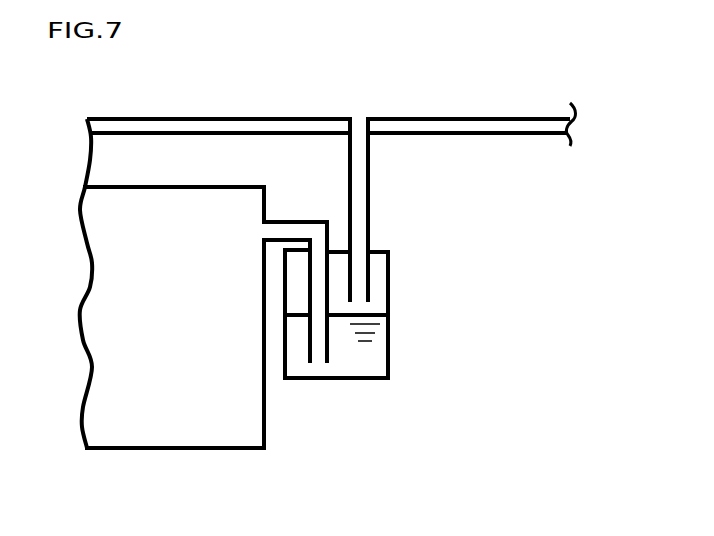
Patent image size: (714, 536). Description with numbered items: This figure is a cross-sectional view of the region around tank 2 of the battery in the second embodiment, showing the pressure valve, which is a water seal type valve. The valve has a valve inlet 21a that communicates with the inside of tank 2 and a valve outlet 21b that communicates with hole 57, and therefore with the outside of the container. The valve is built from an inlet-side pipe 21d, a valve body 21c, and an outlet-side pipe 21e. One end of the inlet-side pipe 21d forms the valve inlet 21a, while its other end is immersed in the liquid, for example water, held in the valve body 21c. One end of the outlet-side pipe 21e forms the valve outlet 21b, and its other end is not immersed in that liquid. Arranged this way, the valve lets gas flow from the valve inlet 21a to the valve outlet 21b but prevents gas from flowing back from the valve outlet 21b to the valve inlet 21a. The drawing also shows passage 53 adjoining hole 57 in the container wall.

The tank 2 is at (173, 430).
The ink supply channel 53 is at (175, 127).
The hole 57 is at (368, 125).
The valve inlet 21a is at (270, 231).
The valve outlet 21b is at (360, 128).
The valve body 21c is at (363, 380).
The inlet-side pipe 21d is at (317, 302).
The outlet-side pipe 21e is at (360, 230).